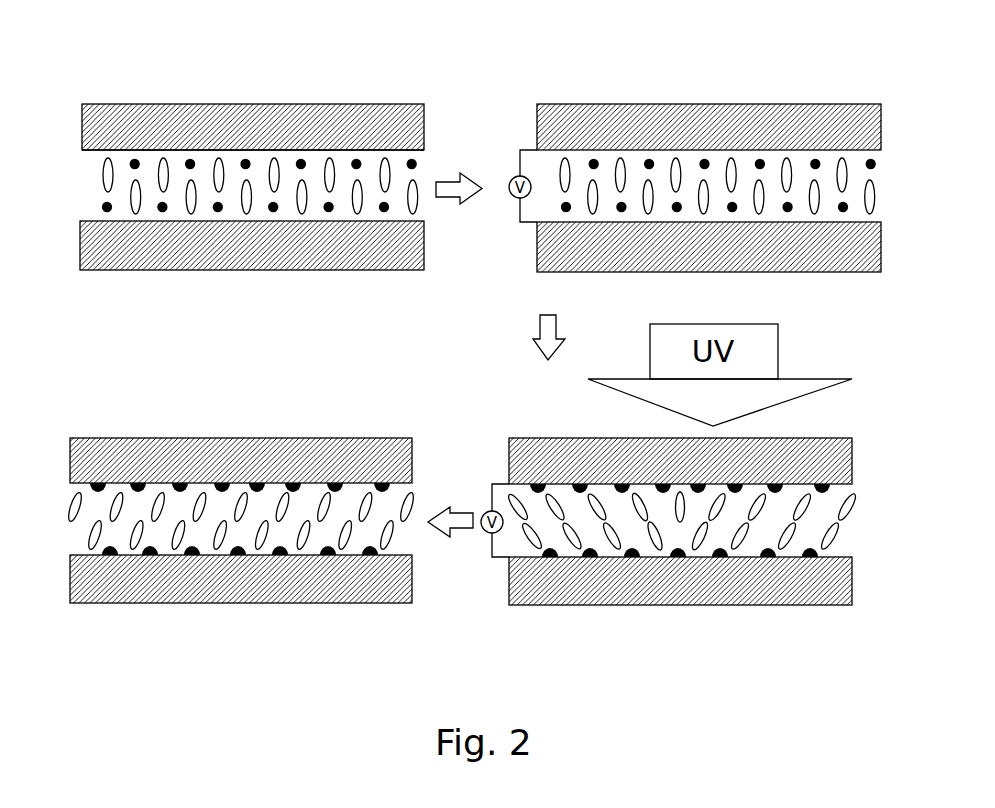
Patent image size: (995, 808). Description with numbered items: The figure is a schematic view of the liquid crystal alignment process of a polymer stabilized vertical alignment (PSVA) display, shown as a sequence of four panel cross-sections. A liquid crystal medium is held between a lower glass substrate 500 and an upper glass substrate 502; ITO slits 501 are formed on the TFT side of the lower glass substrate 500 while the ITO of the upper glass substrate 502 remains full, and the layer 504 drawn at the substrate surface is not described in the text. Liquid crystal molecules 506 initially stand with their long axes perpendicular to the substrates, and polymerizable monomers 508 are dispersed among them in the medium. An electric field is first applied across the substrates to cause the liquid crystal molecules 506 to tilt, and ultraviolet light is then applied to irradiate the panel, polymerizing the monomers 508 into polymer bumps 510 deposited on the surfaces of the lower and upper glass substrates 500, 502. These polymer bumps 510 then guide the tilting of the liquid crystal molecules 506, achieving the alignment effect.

The lower glass substrate 500 is at (81, 248).
The ITO slits 501 is at (262, 217).
The upper glass substrate 502 is at (128, 127).
The alignment layer 504 is at (333, 150).
The liquid crystal molecules 506 is at (382, 177).
The polymerizable monomers 508 is at (187, 163).
The polymer bumps 510 is at (680, 560).